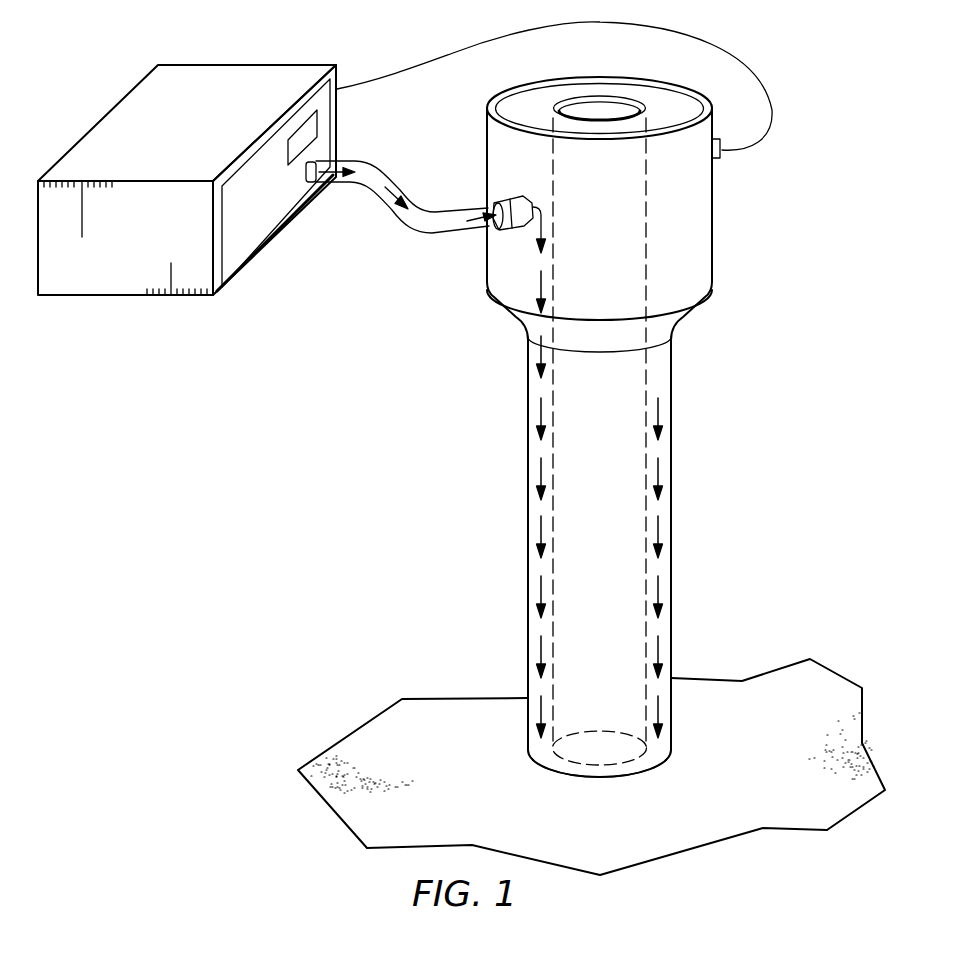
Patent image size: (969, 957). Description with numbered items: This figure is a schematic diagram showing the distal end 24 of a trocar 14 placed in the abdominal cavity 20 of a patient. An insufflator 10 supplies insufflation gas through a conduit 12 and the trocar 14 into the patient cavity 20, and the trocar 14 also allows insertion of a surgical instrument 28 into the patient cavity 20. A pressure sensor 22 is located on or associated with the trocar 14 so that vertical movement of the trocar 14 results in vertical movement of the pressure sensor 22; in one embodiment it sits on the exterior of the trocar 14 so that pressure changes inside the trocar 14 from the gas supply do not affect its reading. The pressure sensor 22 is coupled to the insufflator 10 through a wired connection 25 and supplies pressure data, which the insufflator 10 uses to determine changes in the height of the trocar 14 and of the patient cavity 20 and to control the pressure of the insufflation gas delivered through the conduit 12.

The insufflator 10 is at (146, 249).
The conduit 12 is at (390, 178).
The trocar 14 is at (713, 230).
The abdominal cavity 20 is at (731, 800).
The pressure sensor 22 is at (722, 156).
The distal end 24 is at (672, 740).
The wired connection 25 is at (450, 53).
The surgical instrument 28 is at (630, 97).